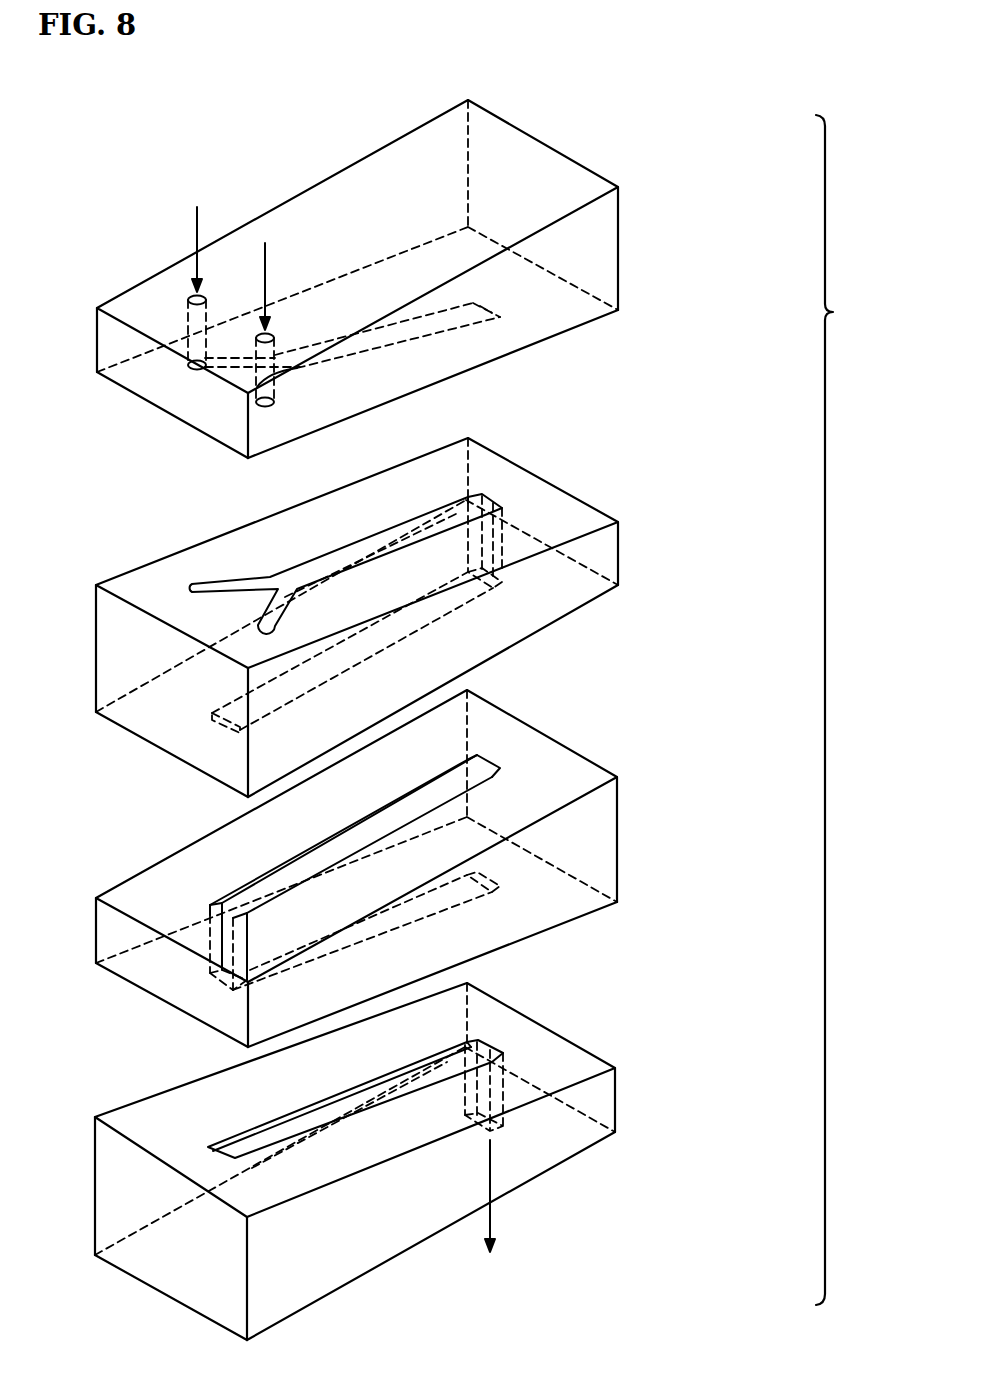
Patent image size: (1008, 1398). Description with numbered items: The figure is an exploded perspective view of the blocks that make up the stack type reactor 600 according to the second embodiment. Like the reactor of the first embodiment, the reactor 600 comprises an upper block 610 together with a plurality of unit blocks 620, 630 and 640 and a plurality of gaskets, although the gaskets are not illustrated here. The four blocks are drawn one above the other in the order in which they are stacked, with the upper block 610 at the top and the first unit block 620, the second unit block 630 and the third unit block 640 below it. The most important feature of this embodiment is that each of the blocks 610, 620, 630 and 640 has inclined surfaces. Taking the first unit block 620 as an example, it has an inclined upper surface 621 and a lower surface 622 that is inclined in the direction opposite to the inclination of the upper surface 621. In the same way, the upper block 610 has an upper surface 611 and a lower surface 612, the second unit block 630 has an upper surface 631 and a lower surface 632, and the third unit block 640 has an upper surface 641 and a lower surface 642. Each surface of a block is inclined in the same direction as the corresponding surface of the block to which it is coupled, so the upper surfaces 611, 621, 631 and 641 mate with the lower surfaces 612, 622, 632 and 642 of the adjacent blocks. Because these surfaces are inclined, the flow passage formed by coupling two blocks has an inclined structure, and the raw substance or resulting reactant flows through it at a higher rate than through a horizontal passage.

The stack type reactor 600 is at (864, 710).
The upper block 610 is at (533, 150).
The upper surface of upper block 611 is at (321, 199).
The lower surface of upper block 612 is at (551, 356).
The first unit block 620 is at (530, 485).
The upper surface of first unit block 621 is at (148, 567).
The lower surface of first unit block 622 is at (563, 632).
The second unit block 630 is at (540, 745).
The upper surface of second unit block 631 is at (148, 877).
The lower surface of second unit block 632 is at (561, 932).
The third unit block 640 is at (543, 1046).
The upper surface of third unit block 641 is at (148, 1105).
The lower surface of third unit block 642 is at (561, 1172).